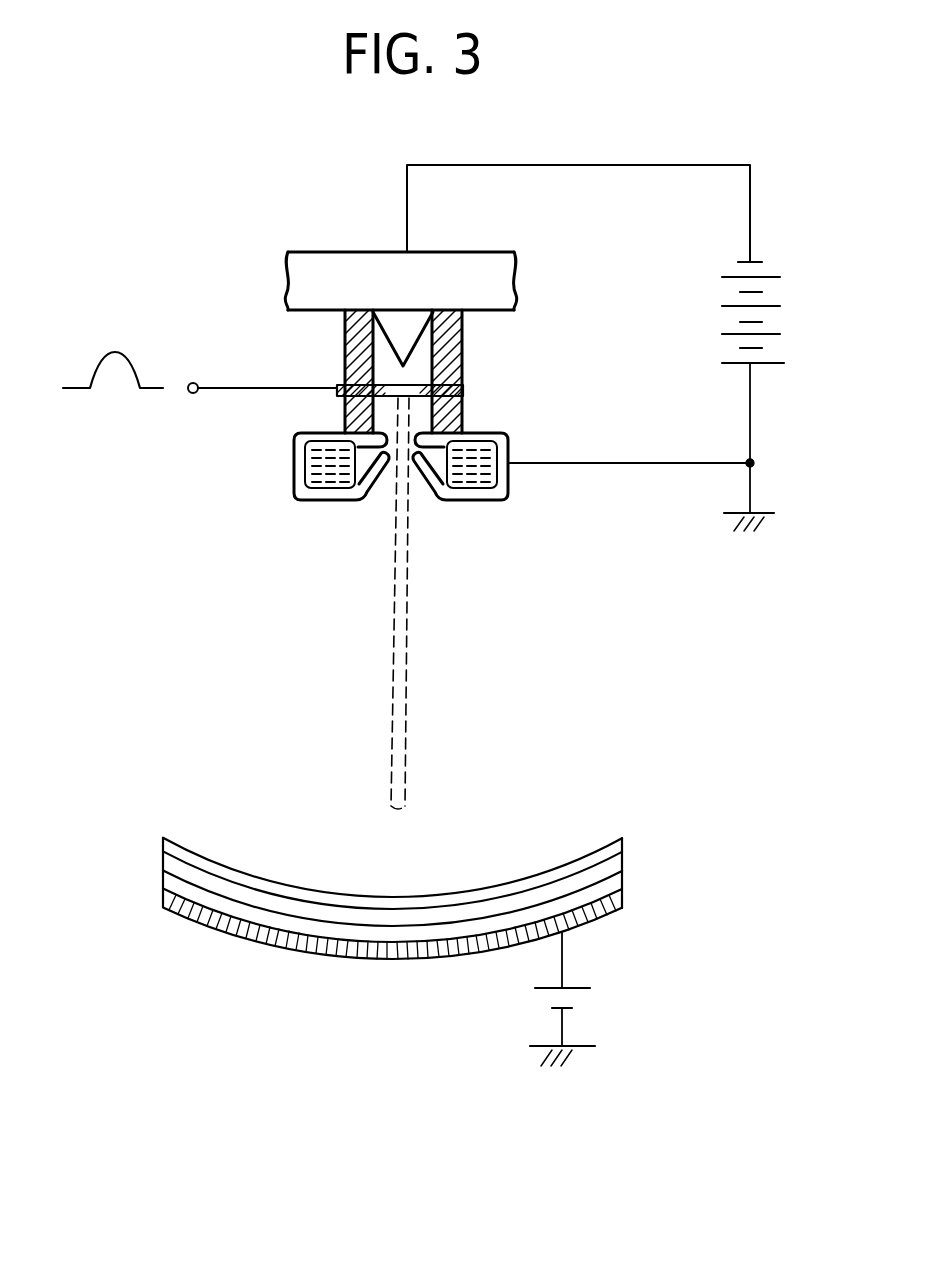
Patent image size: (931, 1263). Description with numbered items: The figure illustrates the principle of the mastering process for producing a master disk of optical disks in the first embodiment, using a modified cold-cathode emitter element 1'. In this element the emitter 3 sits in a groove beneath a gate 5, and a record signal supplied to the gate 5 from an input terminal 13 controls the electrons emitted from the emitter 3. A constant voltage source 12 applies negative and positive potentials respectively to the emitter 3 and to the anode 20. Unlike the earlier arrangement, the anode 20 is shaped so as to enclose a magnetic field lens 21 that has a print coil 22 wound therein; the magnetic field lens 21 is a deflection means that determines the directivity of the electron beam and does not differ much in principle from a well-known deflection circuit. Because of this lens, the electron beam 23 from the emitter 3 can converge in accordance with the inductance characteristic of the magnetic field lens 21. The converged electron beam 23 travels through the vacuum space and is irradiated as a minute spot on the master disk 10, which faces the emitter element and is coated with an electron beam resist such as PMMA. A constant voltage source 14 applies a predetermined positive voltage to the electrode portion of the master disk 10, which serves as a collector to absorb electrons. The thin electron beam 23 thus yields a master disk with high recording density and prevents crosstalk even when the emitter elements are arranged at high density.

The cold-cathode emitter element 1' is at (517, 299).
The emitter 3 is at (412, 341).
The gate 5 is at (338, 385).
The master disk 10 is at (600, 850).
The constant voltage source 12 is at (785, 323).
The input terminal 13 is at (193, 383).
The constant voltage source 14 is at (592, 1001).
The anode 20 is at (508, 433).
The magnetic field lens 21 is at (365, 470).
The print coil 22 is at (318, 487).
The electron beam 23 is at (400, 650).